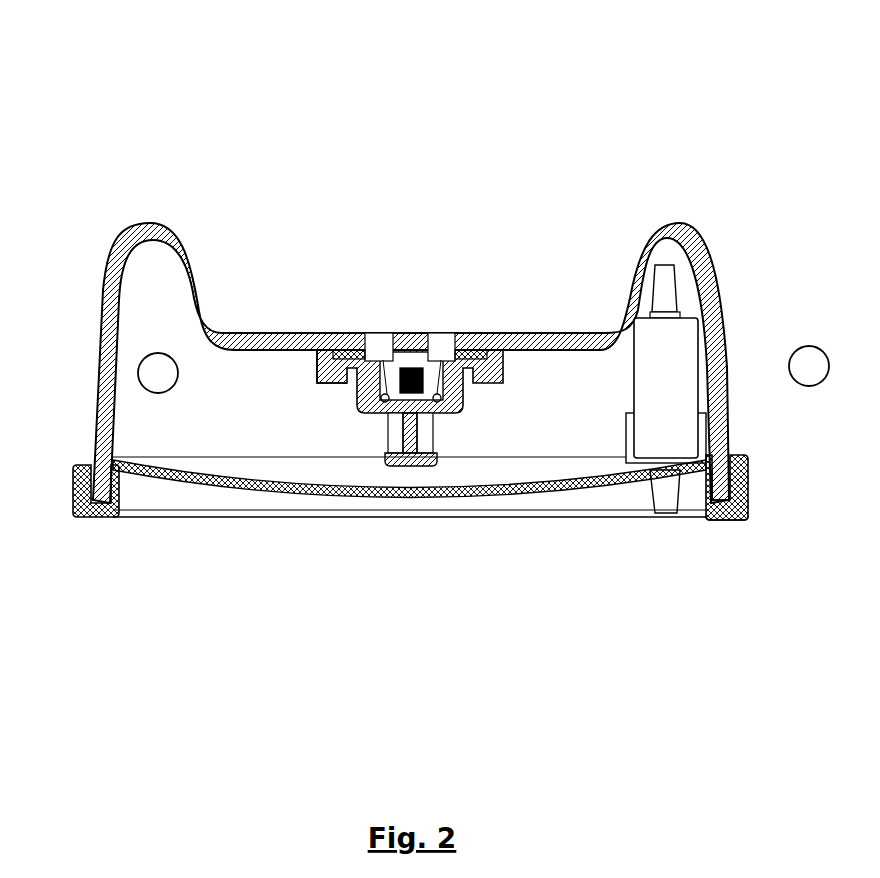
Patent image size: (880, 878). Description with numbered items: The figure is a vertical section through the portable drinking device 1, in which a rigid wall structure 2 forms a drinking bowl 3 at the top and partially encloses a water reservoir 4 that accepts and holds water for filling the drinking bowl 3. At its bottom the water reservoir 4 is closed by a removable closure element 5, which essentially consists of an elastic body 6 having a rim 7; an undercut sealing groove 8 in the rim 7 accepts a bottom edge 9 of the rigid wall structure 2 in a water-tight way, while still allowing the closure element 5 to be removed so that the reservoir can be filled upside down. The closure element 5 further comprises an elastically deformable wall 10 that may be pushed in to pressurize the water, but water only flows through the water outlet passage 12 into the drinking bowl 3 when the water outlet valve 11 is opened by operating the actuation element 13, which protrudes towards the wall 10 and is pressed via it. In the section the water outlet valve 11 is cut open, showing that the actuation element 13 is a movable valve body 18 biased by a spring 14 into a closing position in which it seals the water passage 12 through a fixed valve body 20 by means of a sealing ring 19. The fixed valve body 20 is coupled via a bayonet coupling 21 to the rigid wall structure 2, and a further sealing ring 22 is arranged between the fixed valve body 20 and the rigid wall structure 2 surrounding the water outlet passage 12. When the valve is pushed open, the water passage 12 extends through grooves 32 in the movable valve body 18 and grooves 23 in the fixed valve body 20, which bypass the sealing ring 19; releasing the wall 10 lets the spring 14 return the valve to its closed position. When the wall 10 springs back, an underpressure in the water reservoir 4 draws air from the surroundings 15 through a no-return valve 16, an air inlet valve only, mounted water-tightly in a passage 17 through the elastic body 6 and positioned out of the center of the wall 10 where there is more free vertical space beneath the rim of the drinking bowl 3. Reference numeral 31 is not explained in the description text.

The portable drinking device 1 is at (644, 156).
The rigid wall structure 2 is at (717, 279).
The drinking bowl 3 is at (248, 280).
The water reservoir 4 is at (158, 373).
The removable closure element 5 is at (85, 524).
The elastic body 6 is at (225, 487).
The rim 7 is at (751, 480).
The undercut sealing groove 8 is at (736, 519).
The bottom edge 9 is at (722, 492).
The elastically deformable wall 10 is at (383, 500).
The water outlet valve 11 is at (445, 435).
The water outlet passage 12 is at (445, 343).
The actuation element 13 is at (421, 466).
The spring 14 is at (389, 352).
The surroundings 15 is at (809, 366).
The no-return valve 16 is at (678, 362).
The passage 17 is at (637, 465).
The movable valve body 18 is at (410, 400).
The sealing ring 19 is at (383, 403).
The fixed valve body 20 is at (370, 396).
The bayonet coupling 21 is at (330, 395).
The further sealing ring 22 is at (348, 350).
The grooves 23 is at (450, 428).
The top wall 31 is at (146, 208).
The grooves 32 is at (441, 403).